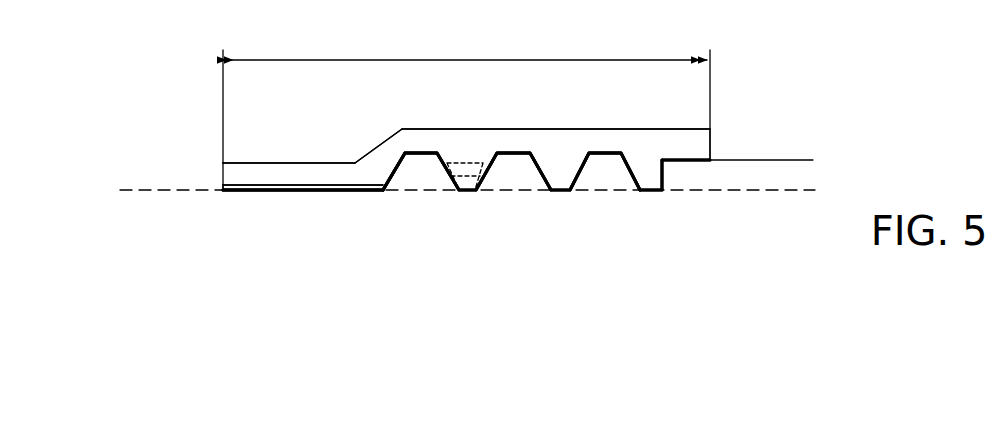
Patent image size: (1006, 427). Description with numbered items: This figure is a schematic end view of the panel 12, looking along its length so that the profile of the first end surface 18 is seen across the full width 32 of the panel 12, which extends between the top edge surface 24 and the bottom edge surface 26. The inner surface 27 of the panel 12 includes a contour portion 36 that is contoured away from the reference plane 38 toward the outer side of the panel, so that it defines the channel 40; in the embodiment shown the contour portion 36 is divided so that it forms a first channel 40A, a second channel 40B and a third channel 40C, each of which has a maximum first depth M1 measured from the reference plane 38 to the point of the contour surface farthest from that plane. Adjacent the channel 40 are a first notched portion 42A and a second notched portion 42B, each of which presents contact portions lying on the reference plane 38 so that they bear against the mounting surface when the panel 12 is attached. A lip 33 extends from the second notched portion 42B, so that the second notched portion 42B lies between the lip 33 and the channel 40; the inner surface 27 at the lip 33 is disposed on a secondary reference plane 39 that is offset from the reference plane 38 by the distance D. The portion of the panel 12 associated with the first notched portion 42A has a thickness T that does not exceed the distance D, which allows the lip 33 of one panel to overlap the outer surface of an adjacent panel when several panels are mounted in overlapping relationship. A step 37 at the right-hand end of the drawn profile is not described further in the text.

The panel 12 is at (737, 80).
The first end surface 18 is at (262, 162).
The top edge surface 24 is at (302, 162).
The bottom edge surface 26 is at (713, 148).
The inner surface 27 is at (363, 191).
The width 32 is at (468, 58).
The lip 33 is at (690, 140).
The contour portion 36 is at (323, 191).
The step surface 37 is at (697, 163).
The reference plane 38 is at (163, 191).
The secondary reference plane 39 is at (803, 158).
The channel 40 is at (658, 263).
The first channel 40A is at (421, 191).
The second channel 40B is at (512, 191).
The third channel 40C is at (603, 191).
The first notched portion 42A is at (278, 223).
The second notched portion 42B is at (675, 193).
The thickness T is at (339, 225).
The distance D is at (794, 225).
The maximum first depth M1 is at (421, 152).